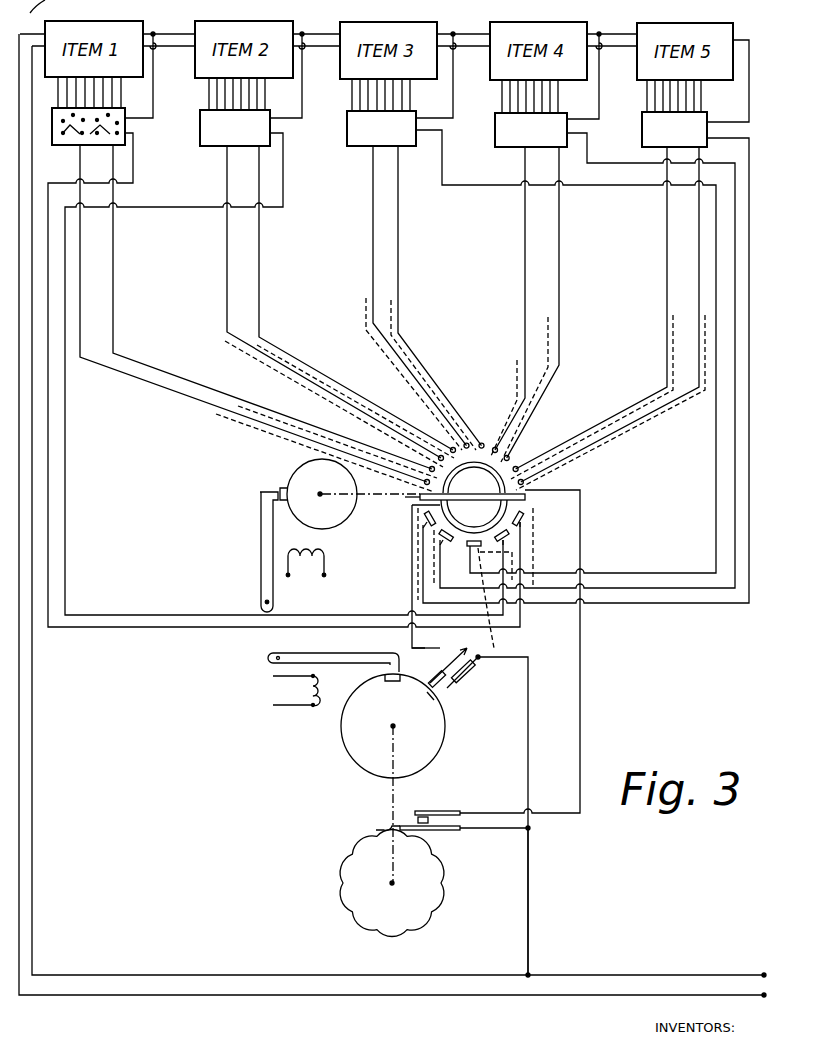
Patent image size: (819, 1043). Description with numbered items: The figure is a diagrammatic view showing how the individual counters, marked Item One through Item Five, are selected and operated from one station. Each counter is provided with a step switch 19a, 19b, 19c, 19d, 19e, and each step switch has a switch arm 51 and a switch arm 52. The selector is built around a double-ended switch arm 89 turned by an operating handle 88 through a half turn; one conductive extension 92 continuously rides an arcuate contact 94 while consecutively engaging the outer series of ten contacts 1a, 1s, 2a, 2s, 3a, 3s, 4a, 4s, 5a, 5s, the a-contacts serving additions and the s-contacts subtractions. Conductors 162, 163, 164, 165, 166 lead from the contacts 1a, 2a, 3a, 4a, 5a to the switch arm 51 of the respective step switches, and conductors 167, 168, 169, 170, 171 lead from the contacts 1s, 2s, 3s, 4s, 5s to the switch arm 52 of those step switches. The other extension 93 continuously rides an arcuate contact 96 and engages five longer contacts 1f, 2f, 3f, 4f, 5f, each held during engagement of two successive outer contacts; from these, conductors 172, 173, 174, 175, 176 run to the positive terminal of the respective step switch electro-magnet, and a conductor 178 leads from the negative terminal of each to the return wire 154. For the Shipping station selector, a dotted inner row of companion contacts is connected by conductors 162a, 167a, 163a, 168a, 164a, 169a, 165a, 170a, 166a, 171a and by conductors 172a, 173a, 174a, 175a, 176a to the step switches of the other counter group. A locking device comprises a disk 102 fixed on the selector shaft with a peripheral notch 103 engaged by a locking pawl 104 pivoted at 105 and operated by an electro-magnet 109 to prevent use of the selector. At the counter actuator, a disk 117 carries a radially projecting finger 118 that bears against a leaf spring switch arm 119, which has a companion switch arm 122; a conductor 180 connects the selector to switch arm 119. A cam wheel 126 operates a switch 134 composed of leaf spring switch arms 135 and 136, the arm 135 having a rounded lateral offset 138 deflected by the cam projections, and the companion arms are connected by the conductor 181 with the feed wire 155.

The step switch 19a is at (127, 127).
The step switch 19b is at (210, 148).
The step switch 19c is at (347, 146).
The step switch 19d is at (497, 148).
The step switch 19e is at (648, 132).
The switch arm 51 is at (70, 146).
The switch arm 52 is at (100, 146).
The conductor 178 is at (756, 86).
The conductor 162 is at (122, 394).
The conductor 163 is at (227, 306).
The conductor 164 is at (373, 282).
The conductor 165 is at (525, 254).
The conductor 166 is at (667, 312).
The conductor 167 is at (113, 290).
The conductor 168 is at (259, 270).
The conductor 169 is at (398, 260).
The conductor 170 is at (559, 243).
The conductor 171 is at (699, 222).
The conductor 162a is at (210, 418).
The conductor 163a is at (310, 390).
The conductor 164a is at (366, 322).
The conductor 165a is at (512, 375).
The conductor 166a is at (662, 395).
The conductor 167a is at (240, 404).
The conductor 168a is at (322, 380).
The conductor 169a is at (398, 332).
The conductor 170a is at (551, 342).
The conductor 171a is at (668, 416).
The contact 1a is at (424, 484).
The contact 1s is at (428, 468).
The contact 2a is at (437, 456).
The contact 2s is at (449, 446).
The contact 3a is at (463, 442).
The contact 3s is at (481, 440).
The contact 4a is at (493, 446).
The contact 4s is at (509, 454).
The contact 5a is at (519, 466).
The contact 5s is at (524, 480).
The arcuate contact 94 is at (474, 477).
The switch arm extension 93 is at (527, 497).
The switch arm 89 is at (474, 516).
The arcuate contact 96 is at (474, 513).
The operating handle 88 is at (402, 508).
The switch arm extension 92 is at (418, 502).
The disk 102 is at (300, 462).
The peripheral notch 103 is at (282, 484).
The locking pawl 104 is at (261, 530).
The pivot 105 is at (262, 602).
The electro-magnet 109 is at (300, 572).
The contact 1f is at (524, 520).
The contact 2f is at (508, 536).
The contact 3f is at (470, 548).
The contact 4f is at (442, 542).
The contact 5f is at (426, 522).
The conductor 172 is at (523, 620).
The conductor 173 is at (364, 608).
The conductor 174 is at (636, 572).
The conductor 175 is at (652, 587).
The conductor 176 is at (664, 604).
The conductor 172a is at (534, 560).
The conductor 173a is at (494, 566).
The conductor 174a is at (505, 599).
The conductor 175a is at (432, 570).
The conductor 176a is at (416, 545).
The conductor 180 is at (412, 638).
The leaf spring switch arm 119 is at (442, 665).
The leaf spring switch arm 122 is at (470, 670).
The radially projecting finger 118 is at (436, 698).
The disk 117 is at (340, 742).
The switch 134 is at (468, 806).
The leaf spring switch arm 136 is at (436, 808).
The leaf spring switch arm 135 is at (445, 832).
The rounded lateral offset 138 is at (390, 826).
The cam wheel 126 is at (352, 906).
The conductor 181 is at (530, 875).
The feed wire 155 is at (32, 802).
The return wire 154 is at (232, 1000).